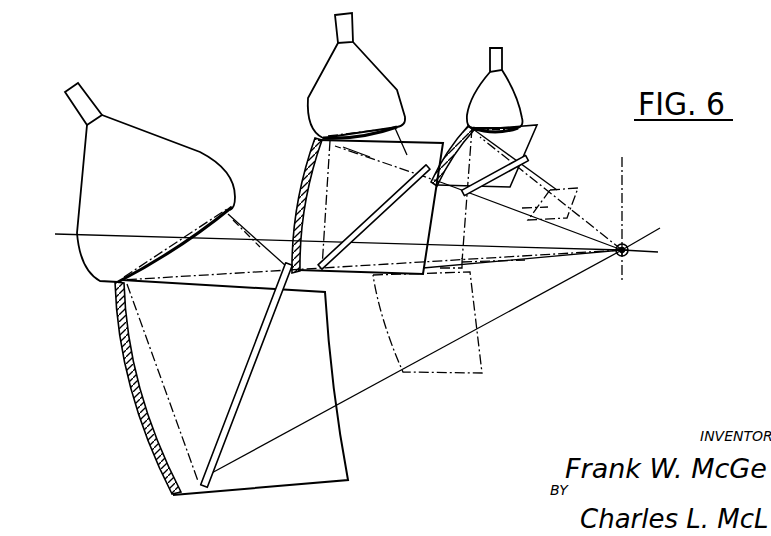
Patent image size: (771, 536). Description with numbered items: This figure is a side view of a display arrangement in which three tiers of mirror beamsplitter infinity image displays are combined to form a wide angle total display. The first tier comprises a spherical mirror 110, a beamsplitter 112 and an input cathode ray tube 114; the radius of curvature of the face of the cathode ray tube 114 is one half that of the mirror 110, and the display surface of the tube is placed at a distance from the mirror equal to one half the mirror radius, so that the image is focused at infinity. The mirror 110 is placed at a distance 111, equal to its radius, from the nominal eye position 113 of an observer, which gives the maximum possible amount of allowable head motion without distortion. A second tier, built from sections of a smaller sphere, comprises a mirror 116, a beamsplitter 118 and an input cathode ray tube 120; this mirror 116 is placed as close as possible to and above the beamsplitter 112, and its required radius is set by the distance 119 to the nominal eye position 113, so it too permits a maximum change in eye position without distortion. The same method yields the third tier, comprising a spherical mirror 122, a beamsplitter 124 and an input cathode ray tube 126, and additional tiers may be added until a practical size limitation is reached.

The spherical mirror 110 is at (132, 402).
The distance 111 is at (402, 372).
The beamsplitter 112 is at (258, 372).
The nominal eye position 113 is at (627, 240).
The input cathode ray tube 114 is at (148, 143).
The mirror 116 is at (297, 184).
The beamsplitter 118 is at (371, 215).
The distance 119 is at (481, 264).
The input cathode ray tube 120 is at (368, 76).
The spherical mirror 122 is at (462, 130).
The beamsplitter 124 is at (530, 163).
The input cathode ray tube 126 is at (502, 92).